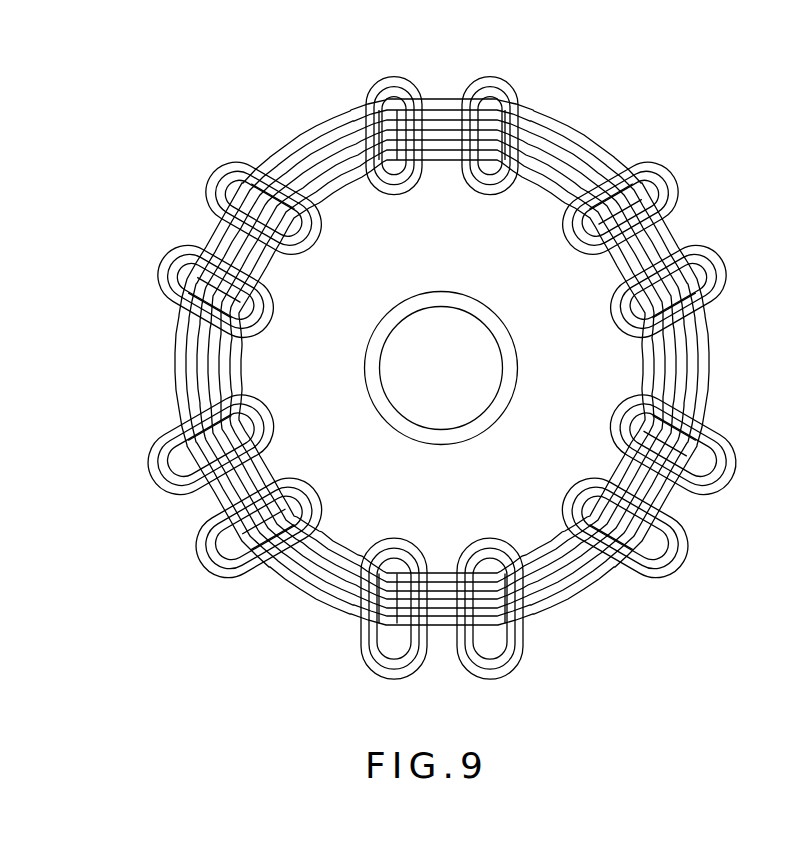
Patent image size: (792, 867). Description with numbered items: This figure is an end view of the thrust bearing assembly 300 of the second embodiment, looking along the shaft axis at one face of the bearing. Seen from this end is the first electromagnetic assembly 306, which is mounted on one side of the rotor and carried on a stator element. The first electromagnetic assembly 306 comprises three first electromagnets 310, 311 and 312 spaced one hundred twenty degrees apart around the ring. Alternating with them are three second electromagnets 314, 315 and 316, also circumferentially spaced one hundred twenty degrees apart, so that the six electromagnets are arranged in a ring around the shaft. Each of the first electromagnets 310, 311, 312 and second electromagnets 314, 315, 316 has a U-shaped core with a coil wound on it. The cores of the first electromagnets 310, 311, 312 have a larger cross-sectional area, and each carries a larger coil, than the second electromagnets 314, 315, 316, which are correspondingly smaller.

The thrust bearing assembly 300 is at (442, 78).
The first electromagnetic assembly 306 is at (353, 97).
The second electromagnet 314 is at (522, 88).
The first electromagnet 310 is at (700, 180).
The first electromagnet 312 is at (155, 312).
The second electromagnet 315 is at (678, 562).
The second electromagnet 316 is at (210, 570).
The first electromagnet 311 is at (512, 677).